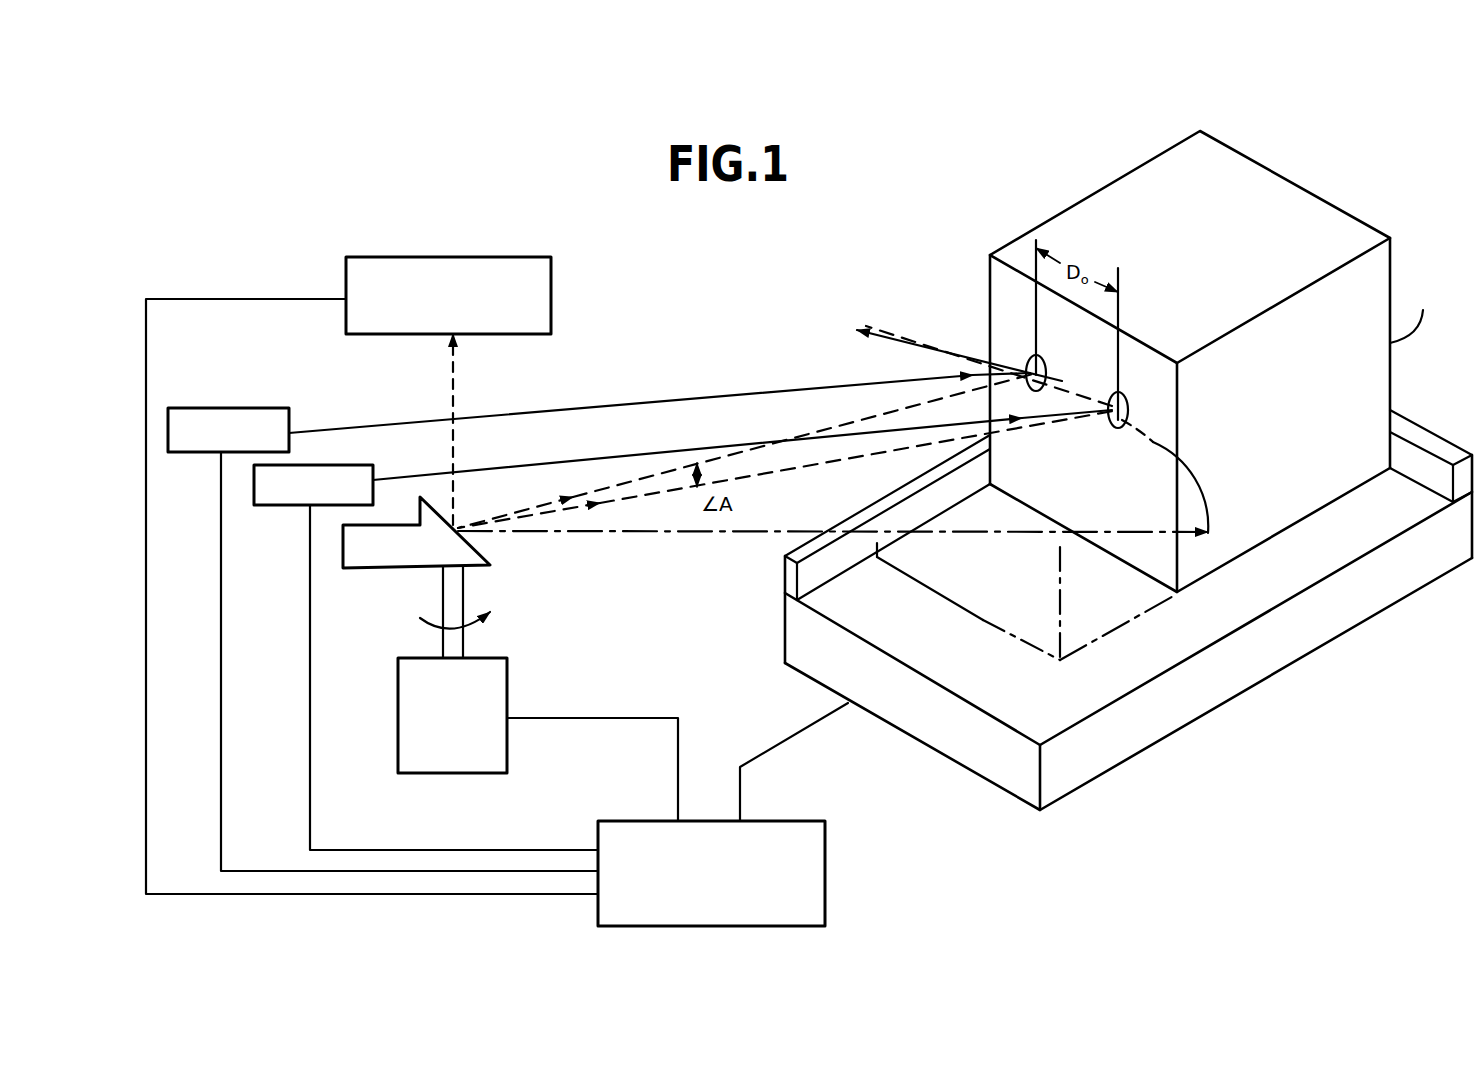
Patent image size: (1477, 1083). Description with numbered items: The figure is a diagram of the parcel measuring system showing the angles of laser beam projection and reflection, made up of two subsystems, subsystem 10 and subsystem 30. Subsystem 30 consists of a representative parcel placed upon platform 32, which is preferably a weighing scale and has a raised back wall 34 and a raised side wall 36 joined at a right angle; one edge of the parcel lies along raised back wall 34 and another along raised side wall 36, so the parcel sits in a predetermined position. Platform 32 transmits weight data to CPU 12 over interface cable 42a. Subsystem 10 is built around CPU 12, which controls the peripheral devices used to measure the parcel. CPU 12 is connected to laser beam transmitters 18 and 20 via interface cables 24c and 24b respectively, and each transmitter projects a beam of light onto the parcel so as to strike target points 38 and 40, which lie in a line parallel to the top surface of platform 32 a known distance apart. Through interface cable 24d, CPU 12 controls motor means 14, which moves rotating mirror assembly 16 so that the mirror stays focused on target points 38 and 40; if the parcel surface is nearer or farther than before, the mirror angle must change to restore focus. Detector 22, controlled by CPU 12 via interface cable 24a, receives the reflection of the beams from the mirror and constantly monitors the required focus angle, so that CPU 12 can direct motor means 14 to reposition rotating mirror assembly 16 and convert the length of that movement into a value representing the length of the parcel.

The subsystem 10 is at (323, 237).
The CPU 12 is at (827, 897).
The motor means 14 is at (508, 677).
The rotating mirror assembly 16 is at (372, 568).
The laser beam transmitter 18 is at (282, 505).
The laser beam transmitter 20 is at (255, 408).
The detector 22 is at (453, 257).
The interface cable 24a is at (533, 895).
The interface cable 24b is at (294, 871).
The interface cable 24c is at (445, 850).
The interface cable 24d is at (630, 718).
The subsystem 30 is at (881, 284).
The platform 32 is at (1337, 613).
The raised back wall 34 is at (1417, 460).
The raised side wall 36 is at (822, 567).
The target point 38 is at (1026, 362).
The target point 40 is at (1120, 426).
The interface cable 42a is at (800, 726).